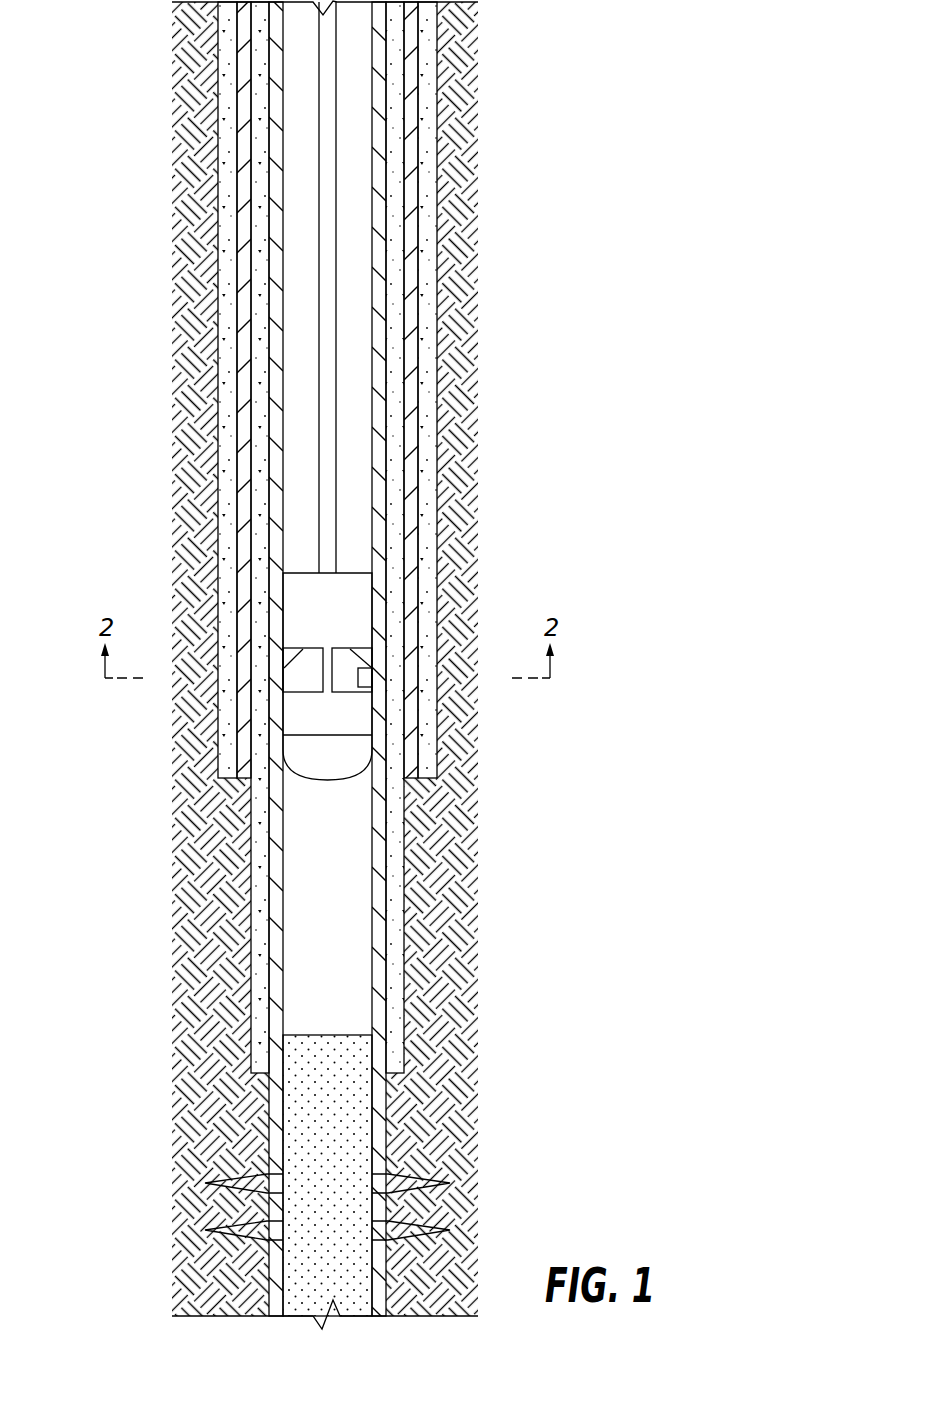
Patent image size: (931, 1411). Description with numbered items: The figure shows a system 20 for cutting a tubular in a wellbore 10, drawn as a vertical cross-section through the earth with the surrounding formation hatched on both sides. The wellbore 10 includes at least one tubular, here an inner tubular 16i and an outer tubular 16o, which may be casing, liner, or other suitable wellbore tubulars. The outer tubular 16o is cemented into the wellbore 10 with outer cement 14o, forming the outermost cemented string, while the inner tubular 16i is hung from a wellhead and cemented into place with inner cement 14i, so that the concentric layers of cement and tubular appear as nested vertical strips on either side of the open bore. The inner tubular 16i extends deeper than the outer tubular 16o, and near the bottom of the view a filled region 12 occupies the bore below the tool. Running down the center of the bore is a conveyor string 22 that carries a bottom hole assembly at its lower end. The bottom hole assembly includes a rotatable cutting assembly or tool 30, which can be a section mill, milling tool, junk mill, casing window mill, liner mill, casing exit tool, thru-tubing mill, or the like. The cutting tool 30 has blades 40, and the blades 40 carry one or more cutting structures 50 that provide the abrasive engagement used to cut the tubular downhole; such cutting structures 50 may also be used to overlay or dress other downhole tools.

The wellbore 10 is at (222, 80).
The gravel pack / fill 12 is at (340, 902).
The inner cement 14i is at (393, 274).
The outer cement 14o is at (427, 342).
The inner tubular 16i is at (380, 122).
The outer tubular 16o is at (410, 197).
The system 20 is at (98, 347).
The conveyor string 22 is at (328, 62).
The cutting tool 30 is at (357, 610).
The blades 40 is at (298, 675).
The cutting structures 50 is at (362, 683).